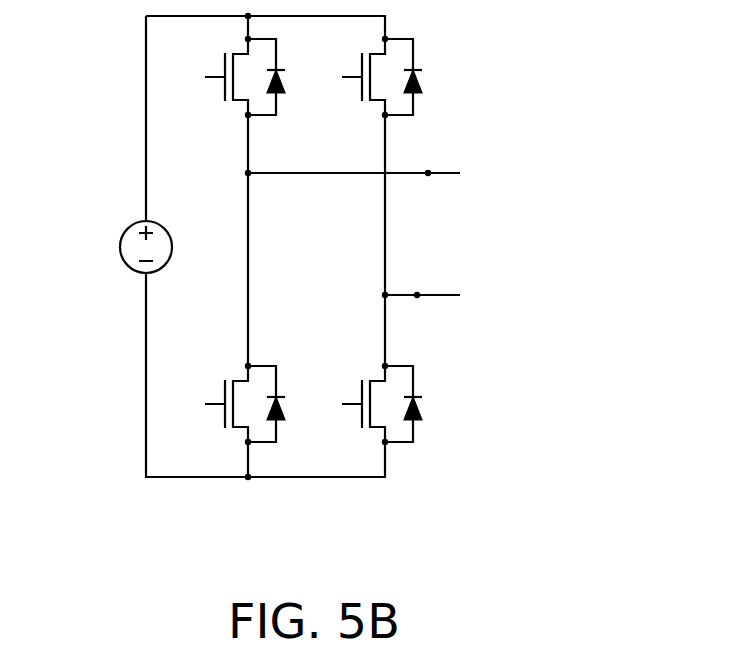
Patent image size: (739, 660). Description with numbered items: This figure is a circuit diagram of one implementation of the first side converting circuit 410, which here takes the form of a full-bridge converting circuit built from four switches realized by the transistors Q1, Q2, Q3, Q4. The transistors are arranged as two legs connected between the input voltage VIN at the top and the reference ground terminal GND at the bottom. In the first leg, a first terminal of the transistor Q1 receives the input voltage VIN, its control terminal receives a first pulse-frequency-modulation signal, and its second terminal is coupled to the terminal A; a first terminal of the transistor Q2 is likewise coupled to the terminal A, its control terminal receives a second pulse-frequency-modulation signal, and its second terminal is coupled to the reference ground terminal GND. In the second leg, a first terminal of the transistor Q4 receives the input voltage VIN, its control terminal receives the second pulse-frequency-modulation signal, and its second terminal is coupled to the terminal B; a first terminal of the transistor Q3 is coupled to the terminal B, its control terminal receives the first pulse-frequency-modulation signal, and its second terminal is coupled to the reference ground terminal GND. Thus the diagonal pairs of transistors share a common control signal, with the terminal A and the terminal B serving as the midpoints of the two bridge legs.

The first side converting circuit 410 is at (280, 270).
The transistor Q1 is at (221, 77).
The transistor Q2 is at (223, 399).
The transistor Q3 is at (360, 399).
The transistor Q4 is at (358, 77).
The terminal A is at (365, 175).
The terminal B is at (421, 276).
The input voltage VIN is at (123, 247).
The reference ground terminal GND is at (265, 500).